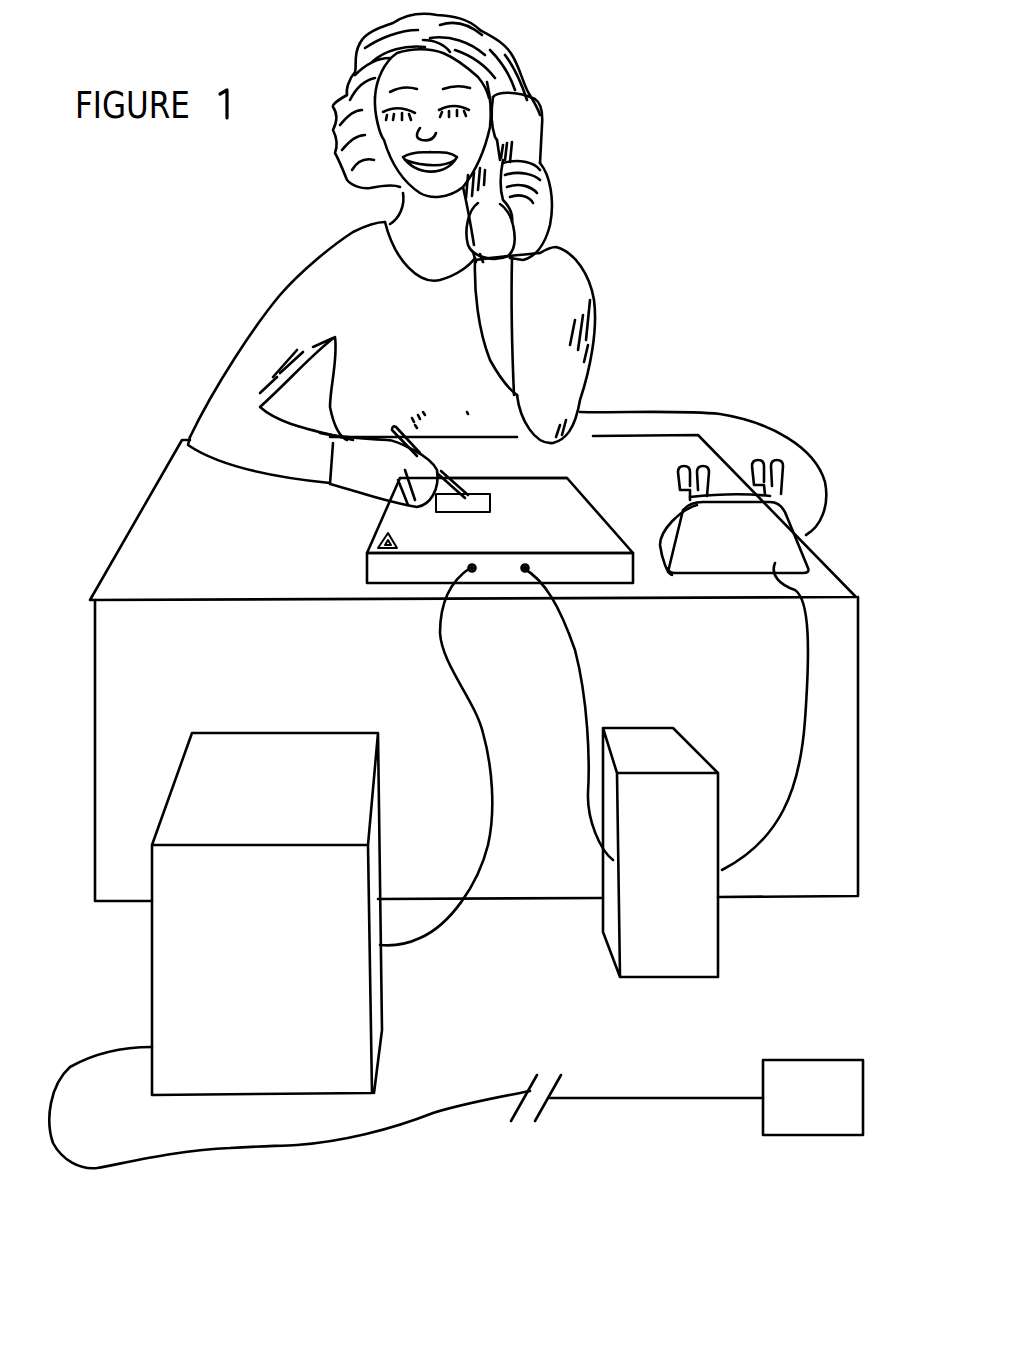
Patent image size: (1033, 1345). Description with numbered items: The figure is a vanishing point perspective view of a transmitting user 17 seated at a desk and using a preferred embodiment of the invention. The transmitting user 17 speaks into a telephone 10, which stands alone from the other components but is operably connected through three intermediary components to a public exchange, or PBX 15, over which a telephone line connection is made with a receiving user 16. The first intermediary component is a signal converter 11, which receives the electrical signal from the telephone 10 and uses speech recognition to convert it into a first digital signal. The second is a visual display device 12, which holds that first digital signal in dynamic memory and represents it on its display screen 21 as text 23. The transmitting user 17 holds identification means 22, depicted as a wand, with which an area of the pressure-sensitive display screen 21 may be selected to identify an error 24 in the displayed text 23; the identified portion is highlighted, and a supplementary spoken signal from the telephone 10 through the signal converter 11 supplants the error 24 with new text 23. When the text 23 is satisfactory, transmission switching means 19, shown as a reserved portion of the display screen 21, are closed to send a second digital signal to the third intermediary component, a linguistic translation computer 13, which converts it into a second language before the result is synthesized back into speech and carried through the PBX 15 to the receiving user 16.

The telephone 10 is at (712, 563).
The signal converter 11 is at (705, 950).
The visual display device 12 is at (497, 573).
The linguistic translation computer 13 is at (170, 972).
The public exchange (PBX) 15 is at (521, 1118).
The receiving user 16 is at (778, 1118).
The transmitting user 17 is at (333, 259).
The transmission switching means 19 is at (380, 537).
The display screen 21 is at (597, 520).
The identification means 22 is at (393, 428).
The text 23 is at (567, 502).
The error 24 is at (472, 498).